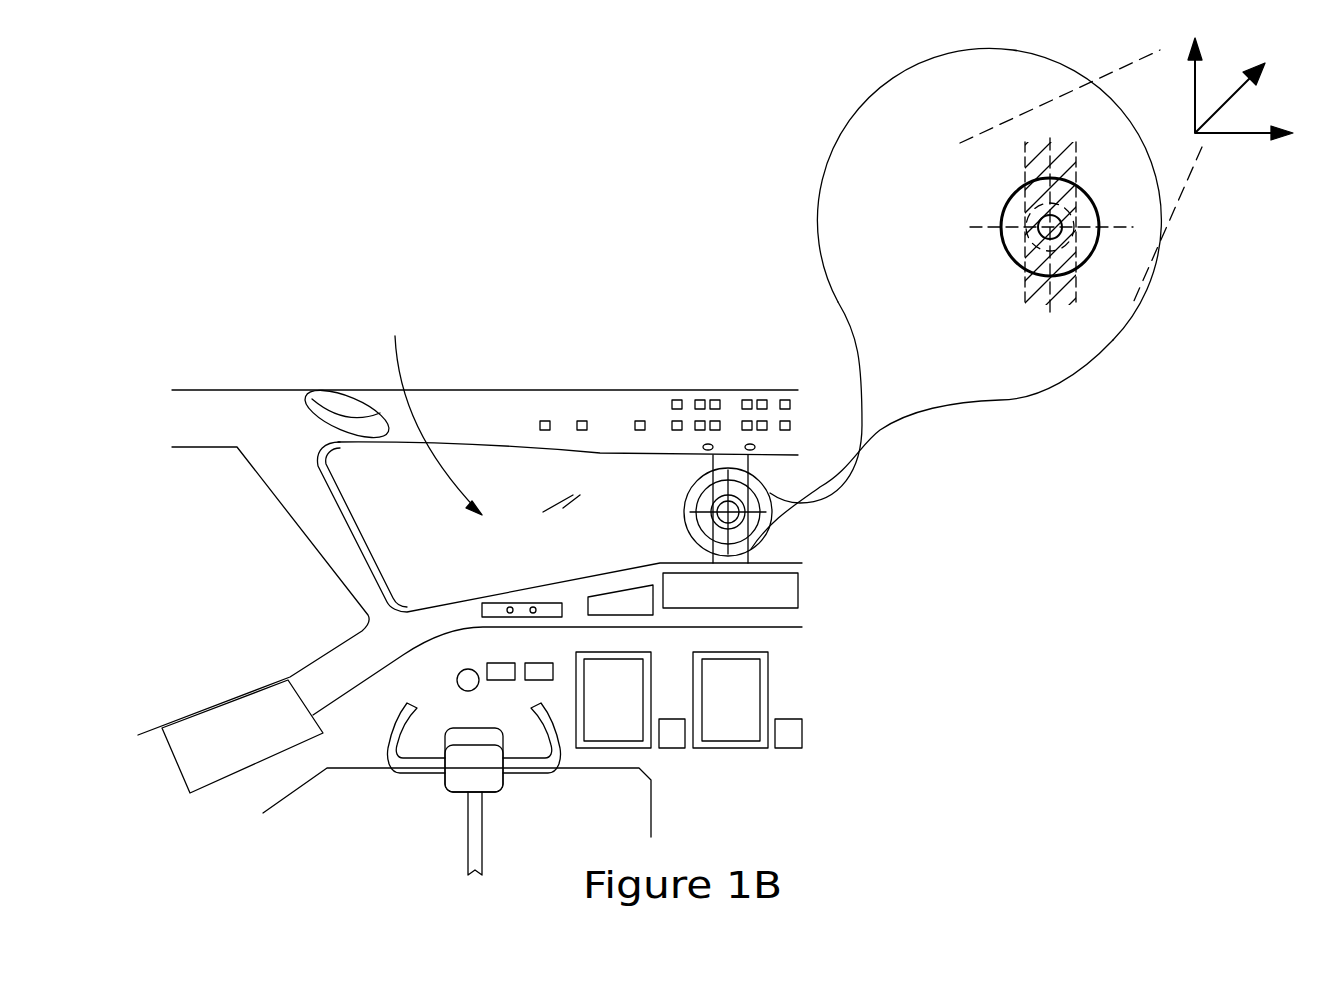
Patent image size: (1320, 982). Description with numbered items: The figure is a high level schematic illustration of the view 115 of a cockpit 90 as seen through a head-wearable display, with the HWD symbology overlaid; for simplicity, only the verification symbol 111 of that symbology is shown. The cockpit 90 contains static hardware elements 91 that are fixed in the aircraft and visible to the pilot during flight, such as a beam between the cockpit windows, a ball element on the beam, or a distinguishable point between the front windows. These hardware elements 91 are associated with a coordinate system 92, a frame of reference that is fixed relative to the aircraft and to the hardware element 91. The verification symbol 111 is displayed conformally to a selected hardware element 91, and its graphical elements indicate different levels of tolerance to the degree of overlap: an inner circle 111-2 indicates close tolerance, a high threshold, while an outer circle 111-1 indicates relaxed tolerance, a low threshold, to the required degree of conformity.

The view 115 is at (155, 136).
The cockpit 90 is at (857, 522).
The hardware element 91 is at (603, 453).
The coordinate system 92 is at (1232, 85).
The verification symbol 111 is at (897, 175).
The outer circle 111-1 is at (1007, 197).
The inner circle 111-2 is at (1027, 258).